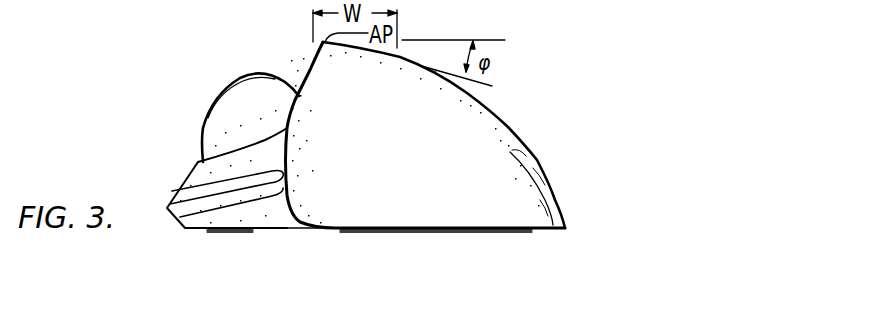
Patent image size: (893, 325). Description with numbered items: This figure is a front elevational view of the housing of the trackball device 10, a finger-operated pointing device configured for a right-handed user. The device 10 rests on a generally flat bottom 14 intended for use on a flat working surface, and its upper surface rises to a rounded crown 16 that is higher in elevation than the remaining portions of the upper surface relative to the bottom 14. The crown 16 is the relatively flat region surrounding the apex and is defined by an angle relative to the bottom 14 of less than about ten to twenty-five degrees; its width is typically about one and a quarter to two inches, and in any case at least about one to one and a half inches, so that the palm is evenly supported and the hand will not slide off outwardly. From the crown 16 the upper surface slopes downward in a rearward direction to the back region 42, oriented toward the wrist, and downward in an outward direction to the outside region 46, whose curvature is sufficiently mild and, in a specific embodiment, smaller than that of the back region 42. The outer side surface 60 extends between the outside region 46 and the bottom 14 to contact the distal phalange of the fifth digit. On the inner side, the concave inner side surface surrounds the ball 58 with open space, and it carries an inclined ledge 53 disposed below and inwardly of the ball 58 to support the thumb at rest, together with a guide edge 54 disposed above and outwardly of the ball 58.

The trackball device 10 is at (562, 50).
The bottom 14 is at (267, 231).
The crown 16 is at (342, 58).
The back region 42 is at (350, 183).
The outside region 46 is at (508, 127).
The ledge 53 is at (187, 177).
The guide edge 54 is at (307, 63).
The ball 58 is at (256, 128).
The outer side surface 60 is at (555, 196).